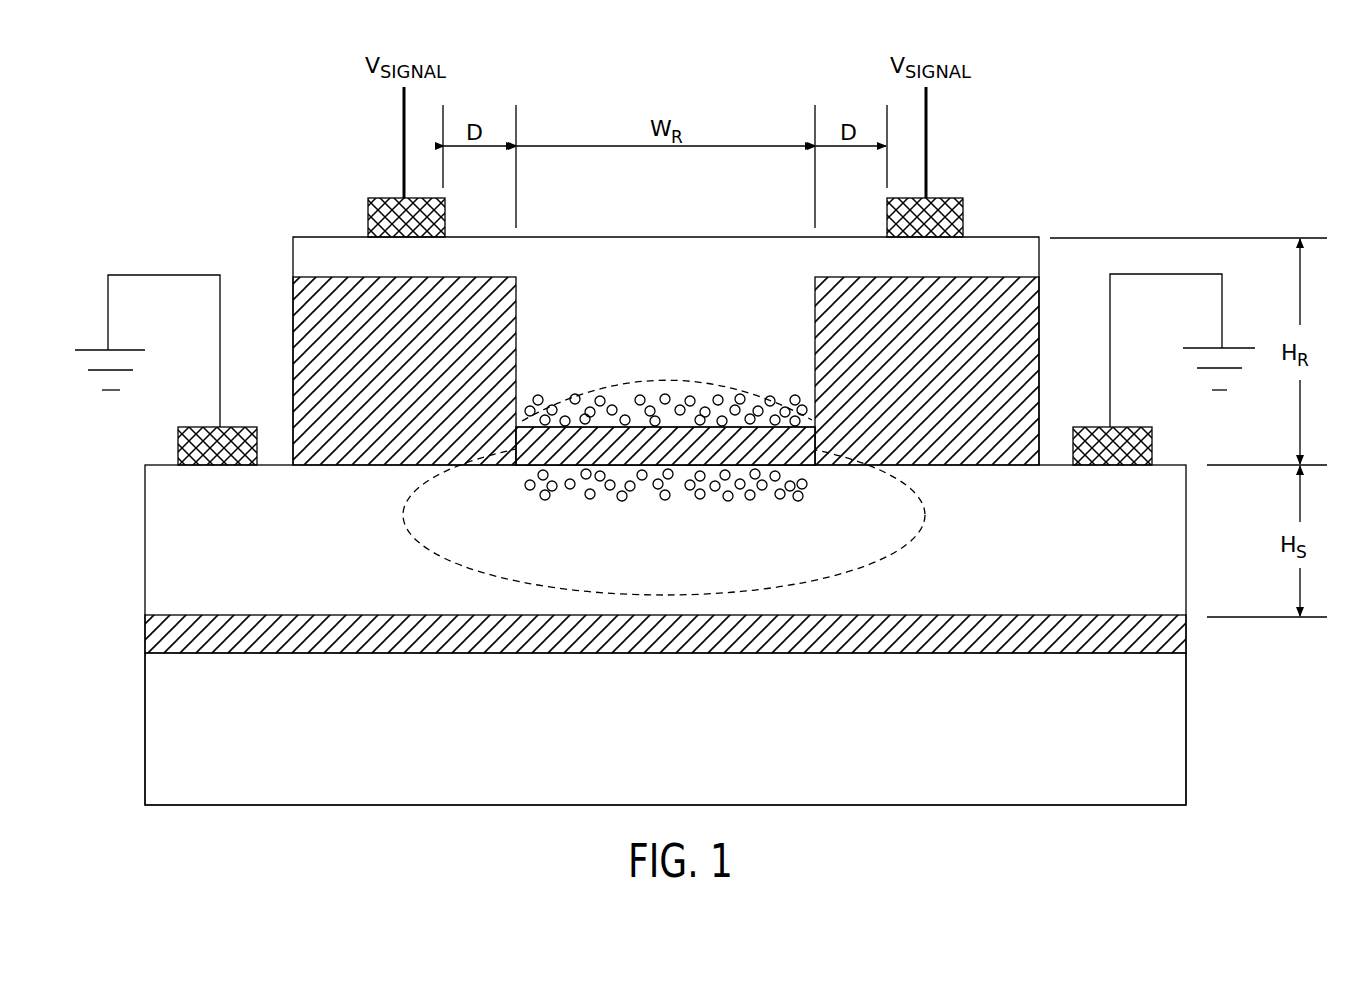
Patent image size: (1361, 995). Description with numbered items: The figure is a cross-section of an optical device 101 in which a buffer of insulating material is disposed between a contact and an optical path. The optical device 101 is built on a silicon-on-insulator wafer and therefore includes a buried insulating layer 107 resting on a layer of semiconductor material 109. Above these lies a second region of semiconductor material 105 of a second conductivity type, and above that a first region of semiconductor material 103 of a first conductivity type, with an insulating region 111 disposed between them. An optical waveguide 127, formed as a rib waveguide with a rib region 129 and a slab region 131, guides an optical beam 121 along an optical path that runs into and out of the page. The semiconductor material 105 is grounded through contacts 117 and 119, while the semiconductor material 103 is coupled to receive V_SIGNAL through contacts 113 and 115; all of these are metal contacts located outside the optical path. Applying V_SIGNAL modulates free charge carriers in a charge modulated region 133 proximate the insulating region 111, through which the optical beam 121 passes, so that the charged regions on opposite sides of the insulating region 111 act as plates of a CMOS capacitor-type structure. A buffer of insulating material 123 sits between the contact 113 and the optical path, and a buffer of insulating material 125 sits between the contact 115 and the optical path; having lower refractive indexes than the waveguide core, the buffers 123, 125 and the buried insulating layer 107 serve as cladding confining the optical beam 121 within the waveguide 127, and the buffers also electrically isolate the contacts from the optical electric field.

The optical device 101 is at (1153, 41).
The first region of semiconductor material 103 is at (637, 252).
The second region of semiconductor material 105 is at (1176, 540).
The buried insulating layer 107 is at (1178, 632).
The layer of semiconductor material 109 is at (1175, 716).
The insulating region 111 is at (540, 452).
The contact 113 is at (368, 202).
The contact 115 is at (963, 203).
The contact 117 is at (178, 437).
The contact 119 is at (1152, 440).
The optical beam 121 is at (925, 517).
The buffer of insulating material 123 is at (548, 317).
The buffer of insulating material 125 is at (822, 300).
The optical waveguide 127 is at (606, 262).
The rib region 129 is at (764, 358).
The slab region 131 is at (1013, 589).
The charge modulated region 133 is at (610, 397).